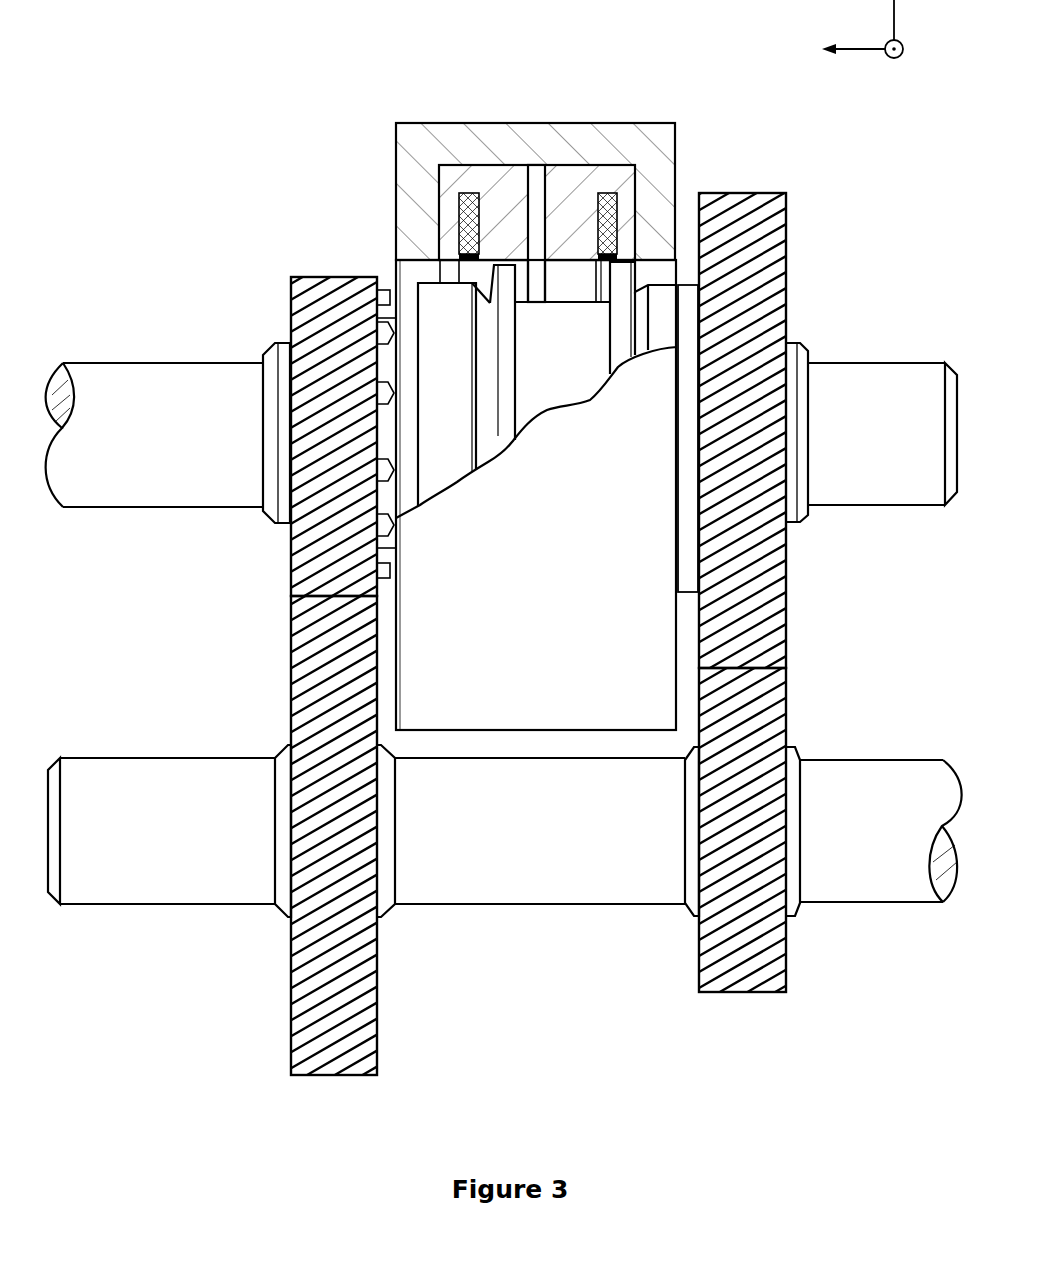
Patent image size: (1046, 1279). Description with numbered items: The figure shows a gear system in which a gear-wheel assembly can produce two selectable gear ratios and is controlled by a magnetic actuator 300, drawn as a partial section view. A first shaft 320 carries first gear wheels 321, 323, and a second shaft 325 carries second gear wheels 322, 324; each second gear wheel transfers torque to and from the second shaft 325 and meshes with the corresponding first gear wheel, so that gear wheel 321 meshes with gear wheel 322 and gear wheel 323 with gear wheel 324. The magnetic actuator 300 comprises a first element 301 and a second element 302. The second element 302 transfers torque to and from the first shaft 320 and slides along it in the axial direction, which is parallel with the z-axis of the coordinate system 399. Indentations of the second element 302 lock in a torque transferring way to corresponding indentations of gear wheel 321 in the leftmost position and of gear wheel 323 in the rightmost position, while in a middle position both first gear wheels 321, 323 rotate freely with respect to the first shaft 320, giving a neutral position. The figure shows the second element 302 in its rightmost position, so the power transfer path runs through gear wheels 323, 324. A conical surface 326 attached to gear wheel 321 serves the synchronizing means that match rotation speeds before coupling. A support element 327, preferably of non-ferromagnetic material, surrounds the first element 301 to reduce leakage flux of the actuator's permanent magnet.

The magnetic actuator 300 is at (526, 384).
The first element 301 is at (490, 175).
The second element 302 is at (579, 363).
The first shaft 320 is at (197, 445).
The first gear wheel 321 is at (290, 300).
The second gear wheel 322 is at (291, 1021).
The first gear wheel 323 is at (786, 245).
The second gear wheel 324 is at (787, 956).
The second shaft 325 is at (577, 847).
The conical surface 326 is at (408, 337).
The support element 327 is at (610, 133).
The coordinate system 399 is at (837, 23).